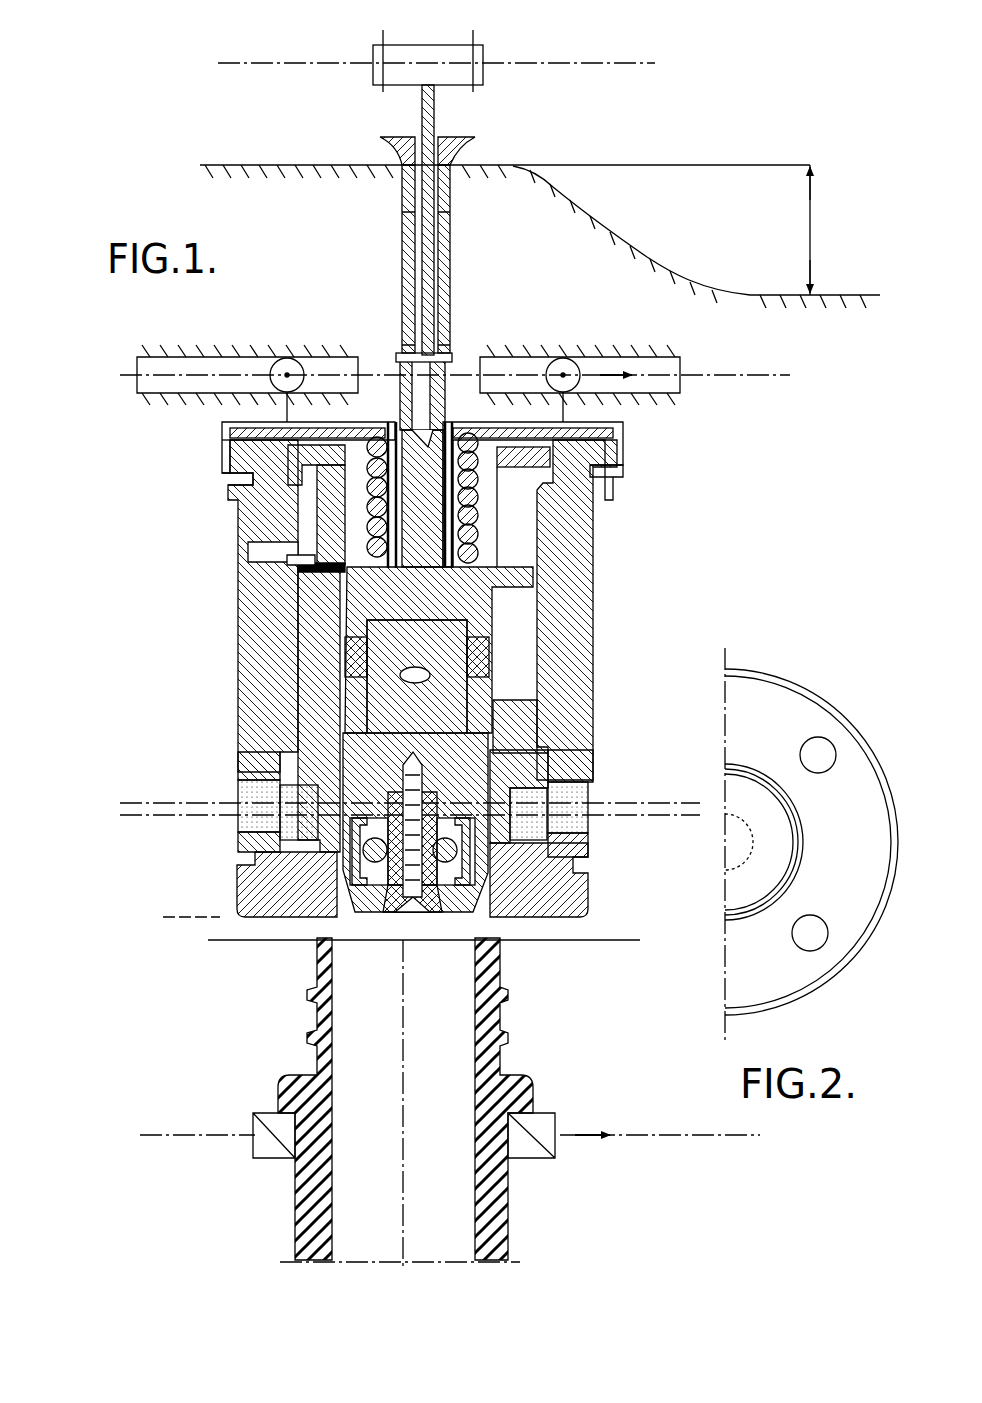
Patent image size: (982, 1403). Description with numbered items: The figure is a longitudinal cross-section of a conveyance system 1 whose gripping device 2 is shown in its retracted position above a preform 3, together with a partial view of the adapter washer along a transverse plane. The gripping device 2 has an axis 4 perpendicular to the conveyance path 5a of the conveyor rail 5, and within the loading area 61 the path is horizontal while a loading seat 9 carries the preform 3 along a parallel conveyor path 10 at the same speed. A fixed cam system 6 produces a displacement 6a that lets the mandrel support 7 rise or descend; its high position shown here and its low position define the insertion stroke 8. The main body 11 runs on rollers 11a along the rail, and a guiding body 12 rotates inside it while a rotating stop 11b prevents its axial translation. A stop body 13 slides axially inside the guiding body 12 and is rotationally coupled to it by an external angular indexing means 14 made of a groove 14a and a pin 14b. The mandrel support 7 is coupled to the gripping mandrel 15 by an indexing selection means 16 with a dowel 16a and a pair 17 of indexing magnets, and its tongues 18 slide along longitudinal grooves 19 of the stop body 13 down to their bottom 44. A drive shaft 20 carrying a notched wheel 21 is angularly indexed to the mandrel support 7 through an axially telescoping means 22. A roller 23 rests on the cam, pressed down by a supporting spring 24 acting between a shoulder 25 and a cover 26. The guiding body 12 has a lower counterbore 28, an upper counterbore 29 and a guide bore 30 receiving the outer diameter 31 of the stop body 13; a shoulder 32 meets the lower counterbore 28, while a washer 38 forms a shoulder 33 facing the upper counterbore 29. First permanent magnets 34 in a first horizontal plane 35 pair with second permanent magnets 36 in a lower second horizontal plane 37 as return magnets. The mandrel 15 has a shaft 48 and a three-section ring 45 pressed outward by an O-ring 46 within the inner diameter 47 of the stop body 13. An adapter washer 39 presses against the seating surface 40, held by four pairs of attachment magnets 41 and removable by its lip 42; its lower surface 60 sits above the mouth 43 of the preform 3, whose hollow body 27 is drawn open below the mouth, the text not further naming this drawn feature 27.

In FIG. 1, the conveyance system 1 is at (240, 198).
In FIG. 1, the gripping device 2 is at (243, 590).
In FIG. 1, the preform 3 is at (508, 1022).
In FIG. 1, the gripping device axis 4 is at (428, 40).
In FIG. 1, the conveyor rail 5 is at (185, 355).
In FIG. 1, the conveyance path 5a is at (638, 368).
In FIG. 1, the fixed cam system 6 is at (258, 163).
In FIG. 1, the displacement 6a is at (626, 238).
In FIG. 1, the mandrel support 7 is at (515, 600).
In FIG. 1, the insertion stroke 8 is at (819, 230).
In FIG. 1, the loading seat 9 is at (535, 1145).
In FIG. 1, the preform conveyor path 10 is at (708, 1137).
In FIG. 1, the main body 11 is at (622, 445).
In FIG. 1, the rollers 11a is at (285, 360).
In FIG. 1, the rotating stop 11b is at (600, 478).
In FIG. 1, the guiding body 12 is at (268, 627).
In FIG. 1, the stop body 13 is at (318, 641).
In FIG. 1, the external angular indexing means 14 is at (105, 513).
In FIG. 1, the groove 14a is at (300, 527).
In FIG. 1, the pin 14b is at (300, 546).
In FIG. 1, the gripping mandrel 15 is at (590, 785).
In FIG. 1, the indexing selection means 16 is at (655, 600).
In FIG. 1, the dowel 16a is at (460, 688).
In FIG. 1, the pair of indexing magnets 17 is at (495, 632).
In FIG. 1, the angular indexing tongues 18 is at (540, 580).
In FIG. 1, the longitudinal grooves 19 is at (540, 518).
In FIG. 1, the drive shaft 20 is at (422, 120).
In FIG. 1, the notched wheel 21 is at (448, 85).
In FIG. 1, the axially telescoping means 22 is at (452, 281).
In FIG. 1, the roller 23 is at (392, 150).
In FIG. 1, the supporting spring 24 is at (290, 492).
In FIG. 1, the shoulder 25 is at (312, 560).
In FIG. 1, the cover 26 is at (225, 430).
In FIG. 1, the pipe bore 27 is at (480, 1050).
In FIG. 1, the lower counterbore 28 is at (300, 762).
In FIG. 1, the upper counterbore 29 is at (228, 474).
In FIG. 1, the guide bore 30 is at (300, 690).
In FIG. 1, the outer diameter 31 is at (305, 733).
In FIG. 1, the shoulder 32 is at (300, 745).
In FIG. 1, the shoulder 33 is at (612, 468).
In FIG. 1, the first permanent magnets 34 is at (260, 830).
In FIG. 1, the first horizontal plane 35 is at (150, 803).
In FIG. 1, the second permanent magnets 36 is at (290, 850).
In FIG. 1, the second horizontal plane 37 is at (150, 815).
In FIG. 1, the washer 38 is at (235, 455).
In FIG. 1, the adapter washer 39 is at (240, 893).
In FIG. 2, the adapter washer 39 is at (763, 967).
In FIG. 1, the seating surface 40 is at (590, 885).
In FIG. 2, the attachment magnets 41 is at (818, 755).
In FIG. 1, the lip 42 is at (583, 875).
In FIG. 1, the mouth 43 is at (498, 932).
In FIG. 1, the bottom 44 is at (430, 678).
In FIG. 1, the ring 45 is at (575, 860).
In FIG. 1, the O-ring 46 is at (555, 838).
In FIG. 1, the inner diameter 47 is at (275, 610).
In FIG. 1, the shaft 48 is at (330, 667).
In FIG. 1, the lower surface 60 is at (430, 895).
In FIG. 1, the loading area 61 is at (800, 165).